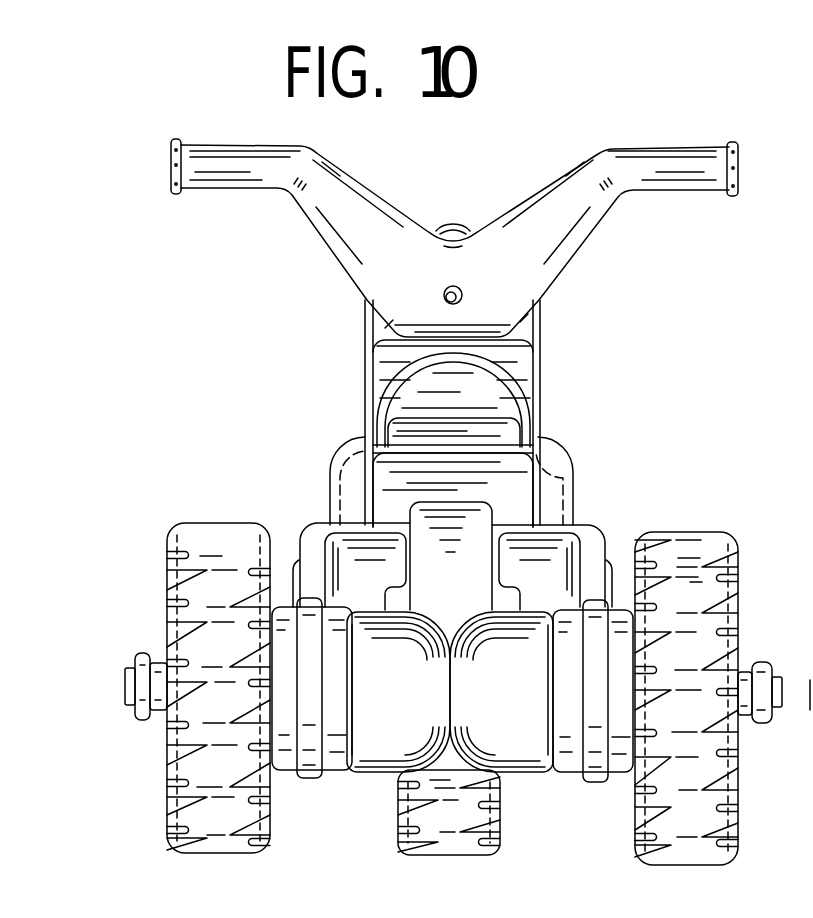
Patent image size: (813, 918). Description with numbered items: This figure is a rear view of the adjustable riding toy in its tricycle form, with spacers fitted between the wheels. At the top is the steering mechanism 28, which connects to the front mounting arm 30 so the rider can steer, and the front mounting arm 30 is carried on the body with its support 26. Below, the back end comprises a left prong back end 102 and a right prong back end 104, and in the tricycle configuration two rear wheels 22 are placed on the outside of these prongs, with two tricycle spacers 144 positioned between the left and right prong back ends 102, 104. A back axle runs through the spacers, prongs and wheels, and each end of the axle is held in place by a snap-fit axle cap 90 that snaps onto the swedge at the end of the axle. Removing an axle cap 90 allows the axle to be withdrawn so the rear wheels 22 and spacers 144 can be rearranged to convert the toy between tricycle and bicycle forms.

The rear wheel 22 is at (237, 852).
The support 26 is at (528, 428).
The steering mechanism 28 is at (650, 149).
The front mounting arm 30 is at (568, 468).
The snap-fit axle cap 90 is at (143, 655).
The left prong back end 102 is at (307, 533).
The right prong back end 104 is at (590, 528).
The tricycle spacer 144 is at (368, 775).